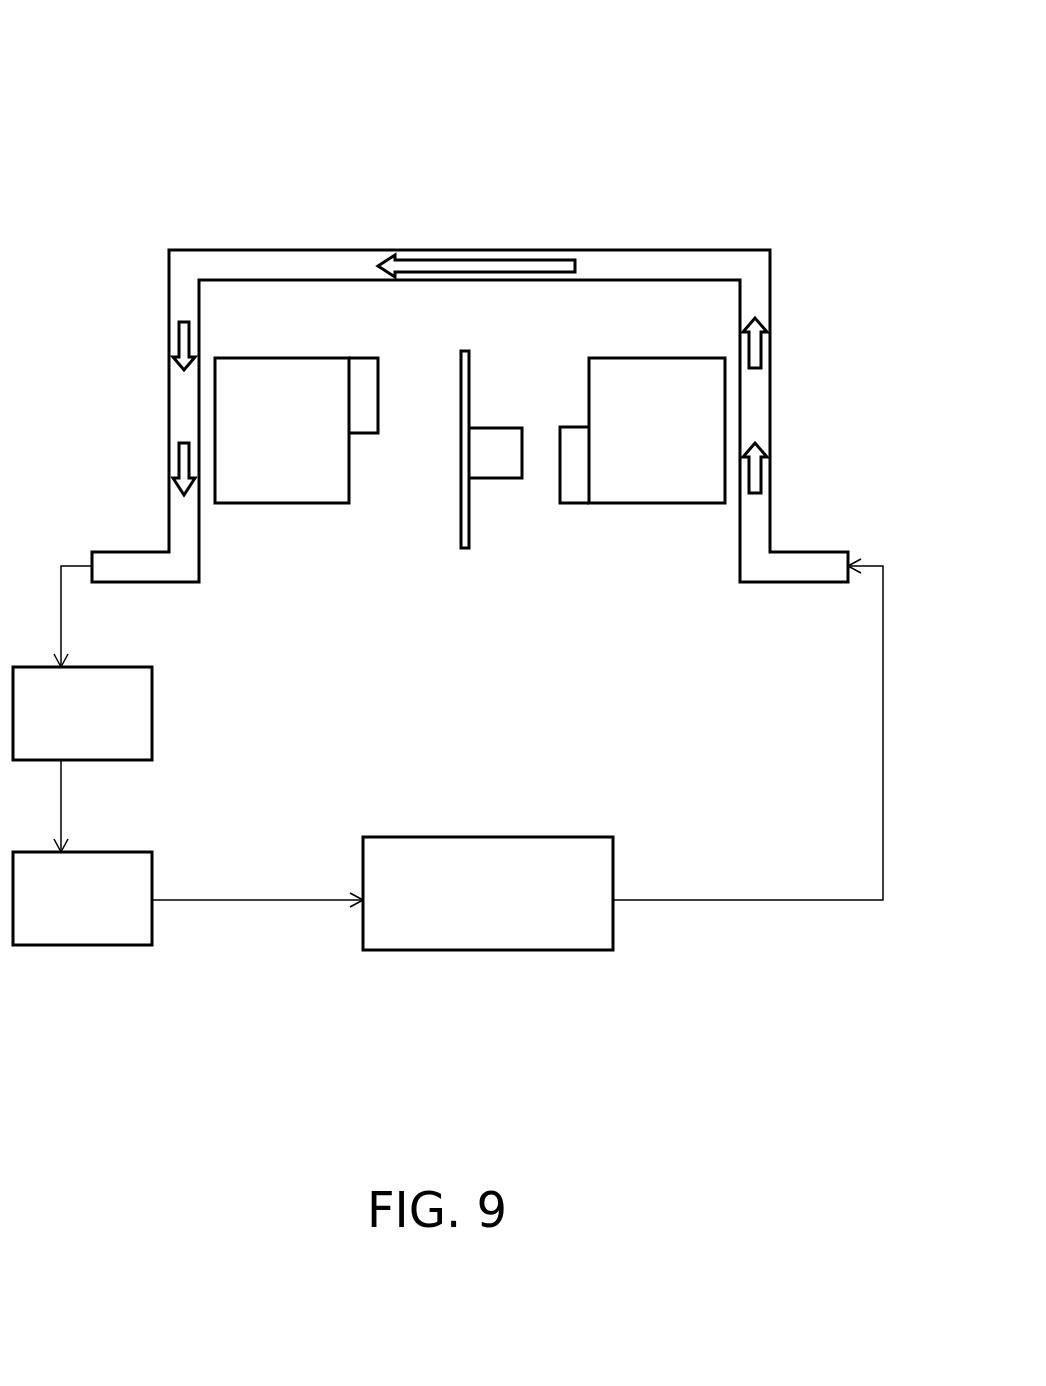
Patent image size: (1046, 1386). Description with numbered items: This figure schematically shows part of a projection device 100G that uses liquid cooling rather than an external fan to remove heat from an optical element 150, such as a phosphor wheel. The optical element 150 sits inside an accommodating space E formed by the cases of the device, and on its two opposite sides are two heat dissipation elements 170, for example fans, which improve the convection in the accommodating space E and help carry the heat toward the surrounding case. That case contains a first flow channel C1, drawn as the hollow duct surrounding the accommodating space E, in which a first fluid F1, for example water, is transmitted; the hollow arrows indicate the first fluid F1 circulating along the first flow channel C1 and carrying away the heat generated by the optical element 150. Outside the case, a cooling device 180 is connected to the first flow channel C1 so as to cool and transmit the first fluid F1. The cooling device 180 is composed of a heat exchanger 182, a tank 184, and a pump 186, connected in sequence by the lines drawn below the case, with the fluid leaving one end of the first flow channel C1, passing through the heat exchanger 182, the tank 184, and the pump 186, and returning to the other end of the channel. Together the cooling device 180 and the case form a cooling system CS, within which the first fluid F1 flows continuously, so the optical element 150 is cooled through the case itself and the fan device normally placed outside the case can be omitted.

The projection device 100G is at (798, 233).
The cooling system CS is at (105, 199).
The first flow channel C1 is at (668, 267).
The first fluid F1 is at (483, 268).
The accommodating space E is at (255, 300).
The optical element 150 is at (497, 467).
The heat dissipation element 170 is at (292, 493).
The cooling device 180 is at (83, 13).
The heat exchanger 182 is at (143, 720).
The tank 184 is at (143, 857).
The pump 186 is at (478, 860).